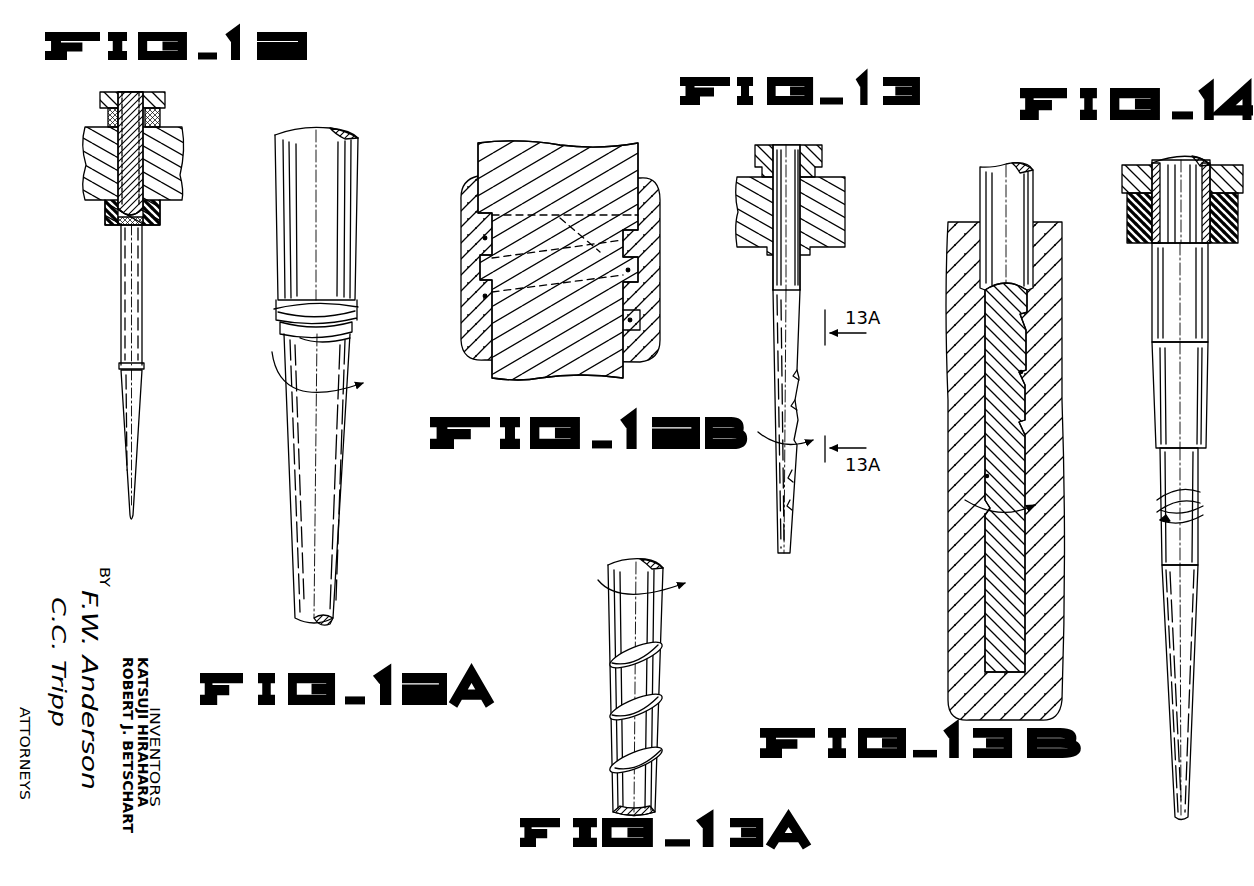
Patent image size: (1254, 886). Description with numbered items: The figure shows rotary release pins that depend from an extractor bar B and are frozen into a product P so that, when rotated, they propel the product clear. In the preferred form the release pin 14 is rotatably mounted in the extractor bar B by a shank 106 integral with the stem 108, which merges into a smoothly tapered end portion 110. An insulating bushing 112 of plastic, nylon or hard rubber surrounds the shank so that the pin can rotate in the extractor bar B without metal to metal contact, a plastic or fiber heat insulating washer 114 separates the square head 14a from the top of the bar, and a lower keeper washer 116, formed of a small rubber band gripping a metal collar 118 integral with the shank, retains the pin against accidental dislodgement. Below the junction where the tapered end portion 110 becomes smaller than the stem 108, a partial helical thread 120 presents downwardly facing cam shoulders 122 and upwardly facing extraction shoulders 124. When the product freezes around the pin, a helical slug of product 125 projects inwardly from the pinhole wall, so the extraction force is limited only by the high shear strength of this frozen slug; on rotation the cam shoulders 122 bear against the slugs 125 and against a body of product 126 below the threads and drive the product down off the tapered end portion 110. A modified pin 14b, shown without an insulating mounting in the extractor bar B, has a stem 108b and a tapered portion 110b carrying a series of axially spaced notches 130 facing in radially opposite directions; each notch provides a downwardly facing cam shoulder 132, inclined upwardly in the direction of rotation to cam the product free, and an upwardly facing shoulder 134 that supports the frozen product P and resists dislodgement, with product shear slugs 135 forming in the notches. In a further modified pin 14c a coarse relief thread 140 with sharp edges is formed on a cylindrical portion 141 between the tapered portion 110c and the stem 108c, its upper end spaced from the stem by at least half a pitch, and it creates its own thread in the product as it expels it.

In FIG. 12, the rotary release pin 14 is at (134, 372).
In FIG. 12A, the rotary release pin 14 is at (319, 361).
In FIG. 12B, the rotary release pin 14 is at (559, 243).
In FIG. 12, the square head 14a is at (165, 98).
In FIG. 13, the square head 14a is at (824, 152).
In FIG. 13, the modified release pin 14b is at (799, 349).
In FIG. 13A, the modified release pin 14b is at (638, 676).
In FIG. 13B, the modified release pin 14b is at (1004, 398).
In FIG. 14, the modified release pin 14c is at (1178, 531).
In FIG. 12, the extractor bar B is at (185, 152).
In FIG. 13, the extractor bar B is at (846, 200).
In FIG. 14, the extractor bar B is at (1223, 162).
In FIG. 12B, the frozen product P is at (462, 354).
In FIG. 13B, the frozen product P is at (946, 577).
In FIG. 12, the shank 106 is at (136, 132).
In FIG. 12, the stem 108 is at (125, 277).
In FIG. 12A, the stem 108 is at (338, 190).
In FIG. 12B, the stem 108 is at (555, 146).
In FIG. 13, the stem 108b is at (778, 286).
In FIG. 13A, the stem 108b is at (622, 573).
In FIG. 13B, the stem 108b is at (1036, 182).
In FIG. 14, the stem 108c is at (1167, 385).
In FIG. 12, the tapered end portion 110 is at (125, 415).
In FIG. 12A, the tapered end portion 110 is at (305, 452).
In FIG. 12B, the tapered end portion 110 is at (625, 372).
In FIG. 13, the tapered portion 110b is at (793, 497).
In FIG. 13A, the tapered portion 110b is at (620, 791).
In FIG. 13B, the tapered portion 110b is at (1015, 545).
In FIG. 14, the tapered portion 110c is at (1170, 673).
In FIG. 12, the insulating bushing 112 is at (146, 182).
In FIG. 14, the insulating bushing 112 is at (1160, 164).
In FIG. 12, the heat insulating washer 114 is at (110, 117).
In FIG. 12, the lower keeper washer 116 is at (160, 218).
In FIG. 14, the lower keeper washer 116 is at (1128, 238).
In FIG. 12, the metal collar 118 is at (122, 226).
In FIG. 12, the partial helical thread 120 is at (120, 366).
In FIG. 12A, the partial helical thread 120 is at (276, 326).
In FIG. 12B, the partial helical thread 120 is at (472, 270).
In FIG. 12A, the cam shoulder 122 is at (357, 322).
In FIG. 12B, the cam shoulder 122 is at (632, 263).
In FIG. 12A, the extraction shoulder 124 is at (282, 318).
In FIG. 12B, the extraction shoulder 124 is at (638, 220).
In FIG. 12B, the slug of product 125 is at (485, 238).
In FIG. 12B, the body of product 126 is at (485, 296).
In FIG. 13, the notch 130 is at (803, 377).
In FIG. 13A, the notch 130 is at (639, 706).
In FIG. 13B, the notch 130 is at (1010, 338).
In FIG. 13A, the cam shoulder 132 is at (612, 665).
In FIG. 13B, the cam shoulder 132 is at (1030, 313).
In FIG. 13A, the upwardly facing shoulder 134 is at (625, 668).
In FIG. 13B, the upwardly facing shoulder 134 is at (1008, 330).
In FIG. 13B, the product shear slug 135 is at (1023, 372).
In FIG. 14, the thread 140 is at (1175, 531).
In FIG. 14, the cylindrical portion 141 is at (1160, 467).